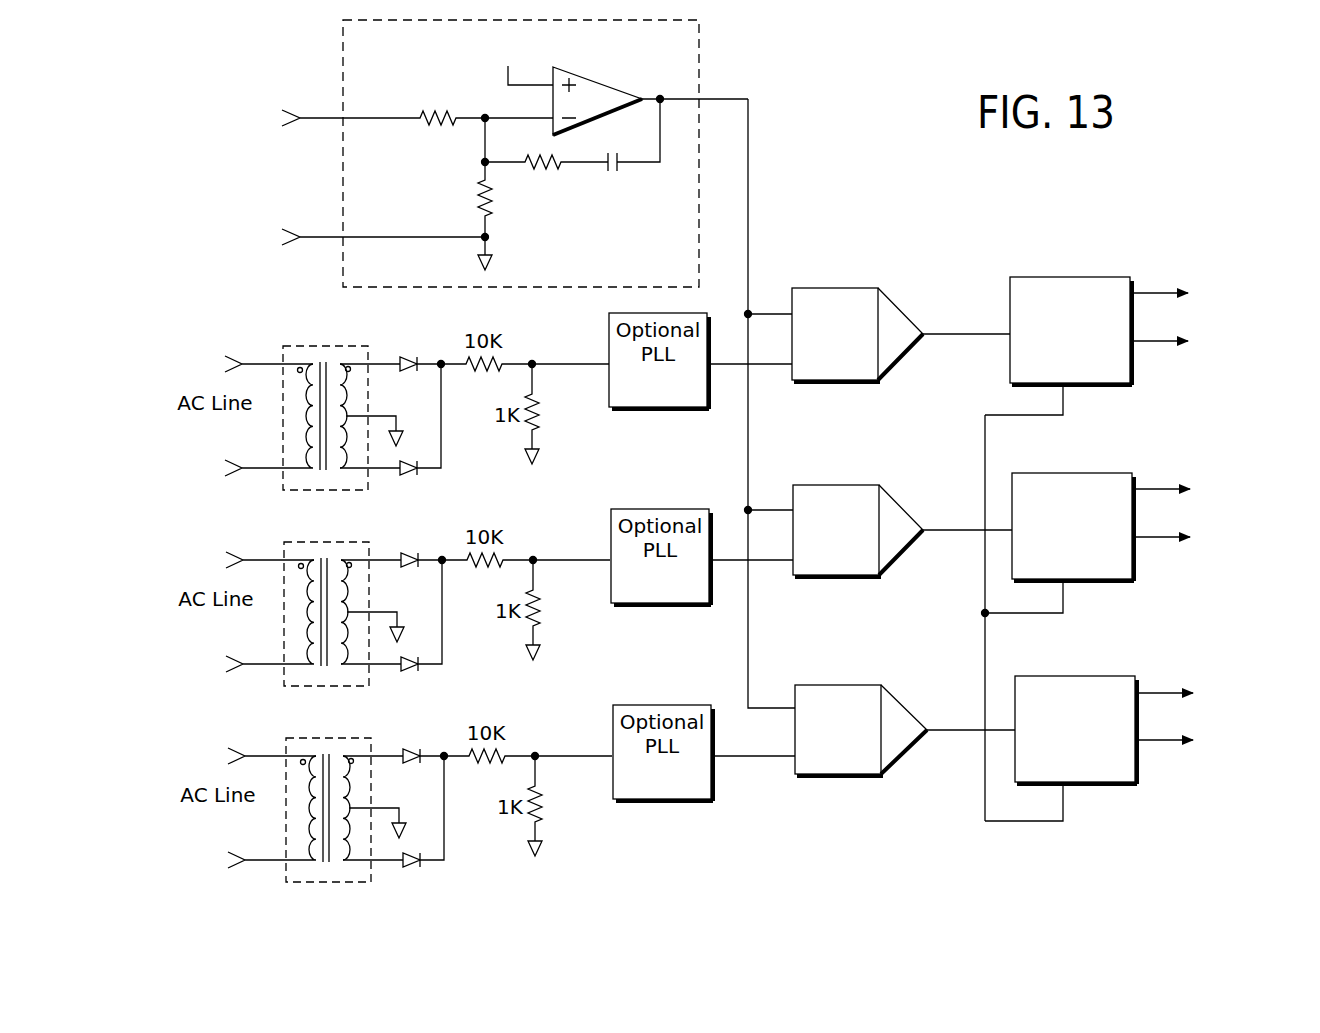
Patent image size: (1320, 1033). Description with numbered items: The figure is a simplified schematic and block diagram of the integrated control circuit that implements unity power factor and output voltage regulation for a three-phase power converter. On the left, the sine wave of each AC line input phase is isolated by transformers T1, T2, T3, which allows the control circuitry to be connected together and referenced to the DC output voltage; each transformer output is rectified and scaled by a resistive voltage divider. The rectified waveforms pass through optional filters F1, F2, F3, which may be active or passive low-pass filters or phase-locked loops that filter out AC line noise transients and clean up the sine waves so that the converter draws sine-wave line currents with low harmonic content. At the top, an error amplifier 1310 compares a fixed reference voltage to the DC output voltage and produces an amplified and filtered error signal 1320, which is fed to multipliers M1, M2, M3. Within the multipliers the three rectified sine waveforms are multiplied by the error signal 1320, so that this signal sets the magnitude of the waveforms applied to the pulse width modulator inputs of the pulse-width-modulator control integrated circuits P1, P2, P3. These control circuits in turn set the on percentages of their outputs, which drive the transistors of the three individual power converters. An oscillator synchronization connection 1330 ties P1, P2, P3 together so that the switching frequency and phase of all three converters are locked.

The error amplifier 1310 is at (628, 269).
The error signal 1320 is at (748, 203).
The oscillator synchronization connection 1330 is at (985, 640).
The transformer T1 is at (393, 403).
The transformer T2 is at (394, 599).
The transformer T3 is at (396, 795).
The optional filter F1 is at (700, 361).
The optional filter F2 is at (702, 557).
The optional filter F3 is at (704, 753).
The multiplier M1 is at (821, 358).
The multiplier M2 is at (822, 554).
The multiplier M3 is at (824, 753).
The pulse-width-modulator control integrated circuit P1 is at (1036, 324).
The pulse-width-modulator control integrated circuit P2 is at (1038, 520).
The pulse-width-modulator control integrated circuit P3 is at (1041, 723).